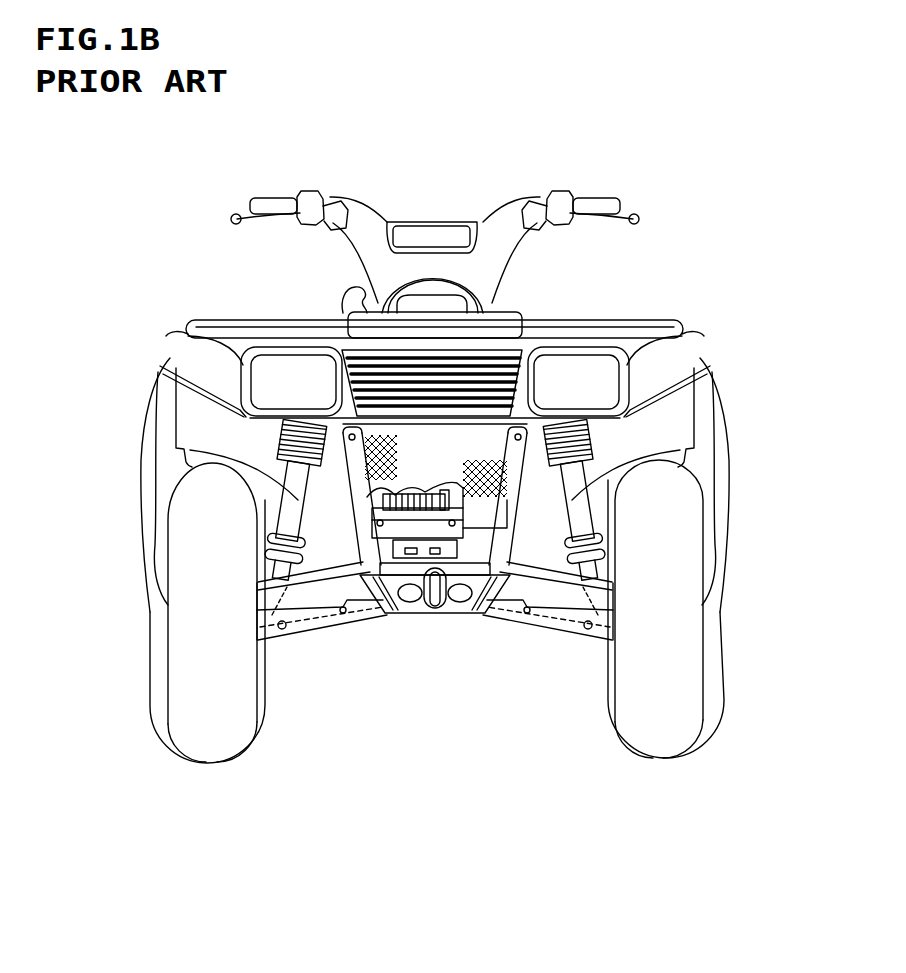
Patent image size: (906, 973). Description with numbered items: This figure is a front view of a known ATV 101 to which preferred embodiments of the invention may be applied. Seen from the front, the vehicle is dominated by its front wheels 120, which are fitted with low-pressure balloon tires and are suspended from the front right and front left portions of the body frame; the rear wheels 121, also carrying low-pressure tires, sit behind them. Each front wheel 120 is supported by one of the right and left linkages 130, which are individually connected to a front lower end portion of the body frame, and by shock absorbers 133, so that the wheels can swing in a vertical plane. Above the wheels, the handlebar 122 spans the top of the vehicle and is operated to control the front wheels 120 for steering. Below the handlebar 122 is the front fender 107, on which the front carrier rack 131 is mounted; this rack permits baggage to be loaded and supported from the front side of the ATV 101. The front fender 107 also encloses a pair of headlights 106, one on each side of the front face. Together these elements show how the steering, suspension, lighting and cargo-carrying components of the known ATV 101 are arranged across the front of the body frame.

The ATV 101 is at (58, 163).
The headlights 106 is at (283, 383).
The front fender 107 is at (203, 357).
The front wheels 120 is at (208, 743).
The rear wheels 121 is at (158, 704).
The handlebar 122 is at (430, 265).
The linkages 130 is at (302, 603).
The front carrier rack 131 is at (598, 326).
The shock absorbers 133 is at (282, 470).